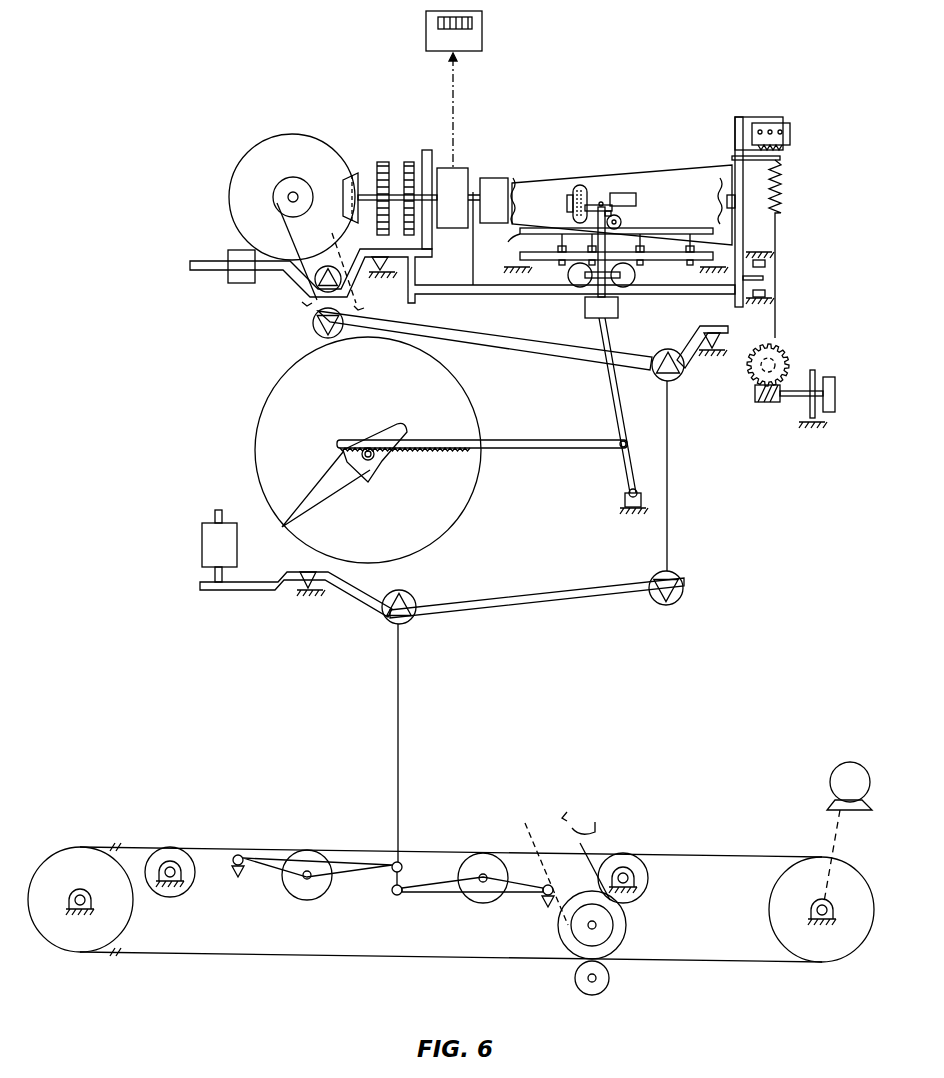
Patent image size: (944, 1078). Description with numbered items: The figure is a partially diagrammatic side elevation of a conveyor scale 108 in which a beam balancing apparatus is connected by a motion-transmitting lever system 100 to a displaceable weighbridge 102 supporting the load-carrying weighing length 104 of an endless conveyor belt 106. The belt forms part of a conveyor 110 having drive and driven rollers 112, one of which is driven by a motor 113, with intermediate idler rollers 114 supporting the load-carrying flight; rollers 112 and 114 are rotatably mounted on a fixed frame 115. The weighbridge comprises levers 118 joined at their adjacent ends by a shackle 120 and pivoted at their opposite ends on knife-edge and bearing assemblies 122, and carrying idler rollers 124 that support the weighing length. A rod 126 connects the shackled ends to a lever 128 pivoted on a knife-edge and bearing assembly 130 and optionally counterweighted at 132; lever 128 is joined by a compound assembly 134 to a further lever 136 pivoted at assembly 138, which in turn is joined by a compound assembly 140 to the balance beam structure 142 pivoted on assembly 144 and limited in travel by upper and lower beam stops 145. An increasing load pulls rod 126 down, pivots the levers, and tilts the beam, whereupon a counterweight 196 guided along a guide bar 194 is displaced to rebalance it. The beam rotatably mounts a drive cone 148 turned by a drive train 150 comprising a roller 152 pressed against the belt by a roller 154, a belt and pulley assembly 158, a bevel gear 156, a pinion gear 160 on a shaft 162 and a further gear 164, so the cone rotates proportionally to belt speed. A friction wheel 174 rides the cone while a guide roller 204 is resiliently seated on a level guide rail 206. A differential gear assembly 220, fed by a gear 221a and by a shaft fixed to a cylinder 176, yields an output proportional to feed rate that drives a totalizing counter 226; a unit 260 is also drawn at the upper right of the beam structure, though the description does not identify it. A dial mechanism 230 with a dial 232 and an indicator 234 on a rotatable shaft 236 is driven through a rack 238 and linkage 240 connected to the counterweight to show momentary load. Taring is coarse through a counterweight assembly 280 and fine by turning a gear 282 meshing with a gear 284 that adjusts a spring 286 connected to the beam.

The motion-transmitting lever system 100 is at (541, 608).
The weighbridge 102 is at (289, 852).
The load-carrying weighing length 104 is at (352, 852).
The endless conveyor belt 106 is at (204, 964).
The conveyor scale 108 is at (451, 875).
The conveyor 110 is at (786, 972).
The drive and driven rollers 112 is at (120, 921).
The motor 113 is at (830, 774).
The intermediate idler rollers 114 is at (178, 893).
The fixed frame 115 is at (91, 900).
The levers 118 is at (347, 870).
The shackle 120 is at (403, 867).
The knife-edge and bearing assemblies 122 is at (243, 870).
The idler rollers 124 is at (312, 900).
The rod 126 is at (399, 808).
The lever 128 is at (470, 612).
The knife-edge and bearing assembly 130 is at (293, 598).
The counterweight 132 is at (202, 553).
The compound knife-edge and bearing assembly 134 is at (668, 534).
The lever 136 is at (530, 350).
The knife-edge and bearing assembly 138 is at (722, 348).
The compound knife-edge and bearing assembly 140 is at (314, 315).
The balance beam structure 142 is at (506, 298).
The knife-edge and bearing assembly 144 is at (388, 273).
The upper and lower beam stops 145 is at (770, 290).
The drive cone 148 is at (628, 172).
The drive train 150 is at (396, 520).
The roller 152 is at (626, 940).
The roller 154 is at (609, 980).
The bevel gear 156 is at (233, 172).
The belt and pulley assembly 158 is at (308, 180).
The pinion gear 160 is at (349, 172).
The shaft 162 is at (382, 160).
The gear 164 is at (409, 160).
The friction wheel 174 is at (582, 184).
The cylinder 176 is at (508, 178).
The guide bar 194 is at (690, 294).
The counterweight 196 is at (618, 308).
The guide roller 204 is at (622, 222).
The guide rail 206 is at (535, 228).
The differential gear assembly 220 is at (458, 168).
The gear 221a is at (409, 176).
The totalizing counter 226 is at (483, 42).
The dial mechanism 230 is at (387, 450).
The dial 232 is at (475, 510).
The indicator 234 is at (325, 497).
The rotatable shaft 236 is at (385, 462).
The rack 238 is at (518, 438).
The linkage 240 is at (622, 399).
The switch 260 is at (795, 122).
The counterweight assembly 280 is at (238, 284).
The gear 282 is at (765, 403).
The gear 284 is at (790, 361).
The spring 286 is at (783, 205).